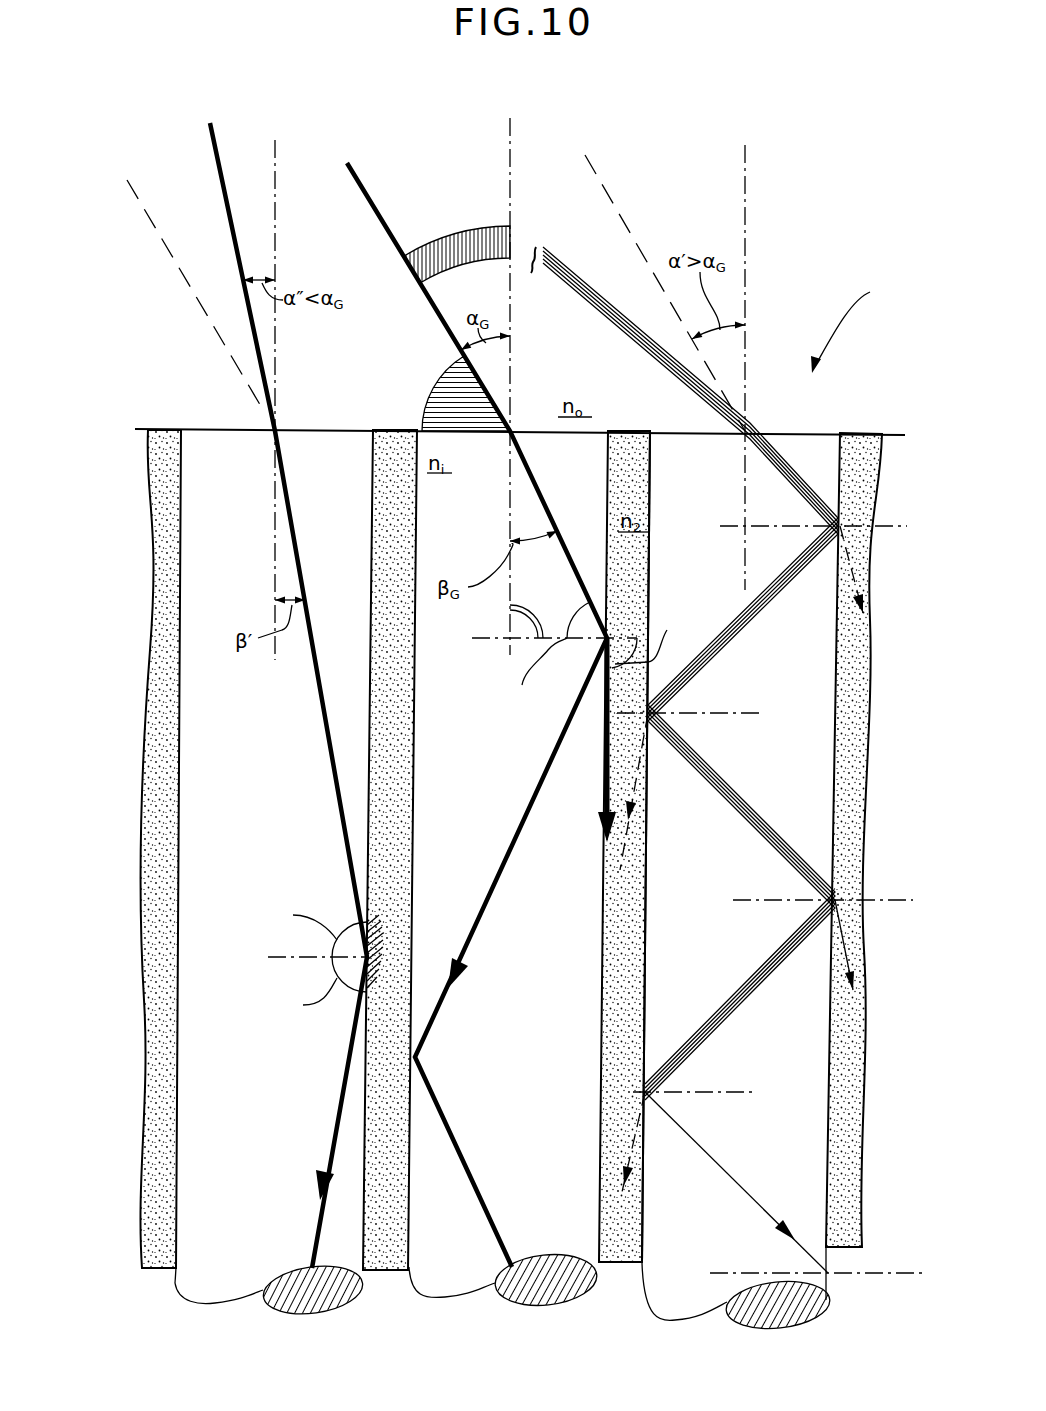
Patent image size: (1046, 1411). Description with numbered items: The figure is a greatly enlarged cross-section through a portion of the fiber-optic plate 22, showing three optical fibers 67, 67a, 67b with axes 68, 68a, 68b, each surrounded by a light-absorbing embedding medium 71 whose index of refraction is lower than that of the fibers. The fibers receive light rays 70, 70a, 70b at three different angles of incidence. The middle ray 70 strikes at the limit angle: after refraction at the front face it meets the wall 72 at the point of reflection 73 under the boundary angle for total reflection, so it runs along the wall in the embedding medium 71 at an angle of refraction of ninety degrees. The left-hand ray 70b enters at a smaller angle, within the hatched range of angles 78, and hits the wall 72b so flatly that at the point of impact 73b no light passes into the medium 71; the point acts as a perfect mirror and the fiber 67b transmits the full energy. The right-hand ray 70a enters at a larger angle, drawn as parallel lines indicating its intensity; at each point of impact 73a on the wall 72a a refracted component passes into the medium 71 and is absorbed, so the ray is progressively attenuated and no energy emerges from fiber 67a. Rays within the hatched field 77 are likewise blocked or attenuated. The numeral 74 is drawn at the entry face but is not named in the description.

The fiber-optic plate 22 is at (854, 328).
The optical fiber 67 is at (457, 1253).
The optical fiber 67a is at (813, 1203).
The optical fiber 67b is at (200, 1275).
The fiber axis 68 is at (512, 145).
The fiber axis 68a is at (746, 197).
The fiber axis 68b is at (278, 165).
The light ray 70 is at (365, 196).
The light ray 70a is at (538, 243).
The light ray 70b is at (221, 167).
The embedding medium 71 is at (162, 775).
The wall 72 is at (625, 846).
The wall 72a is at (655, 547).
The wall 72b is at (372, 592).
The point of reflection 73 is at (609, 638).
The point of impact 73a is at (840, 518).
The point of impact 73b is at (375, 935).
The fiber end face 74 is at (523, 431).
The hatched field 77 is at (430, 390).
The hatched range of angles 78 is at (457, 240).